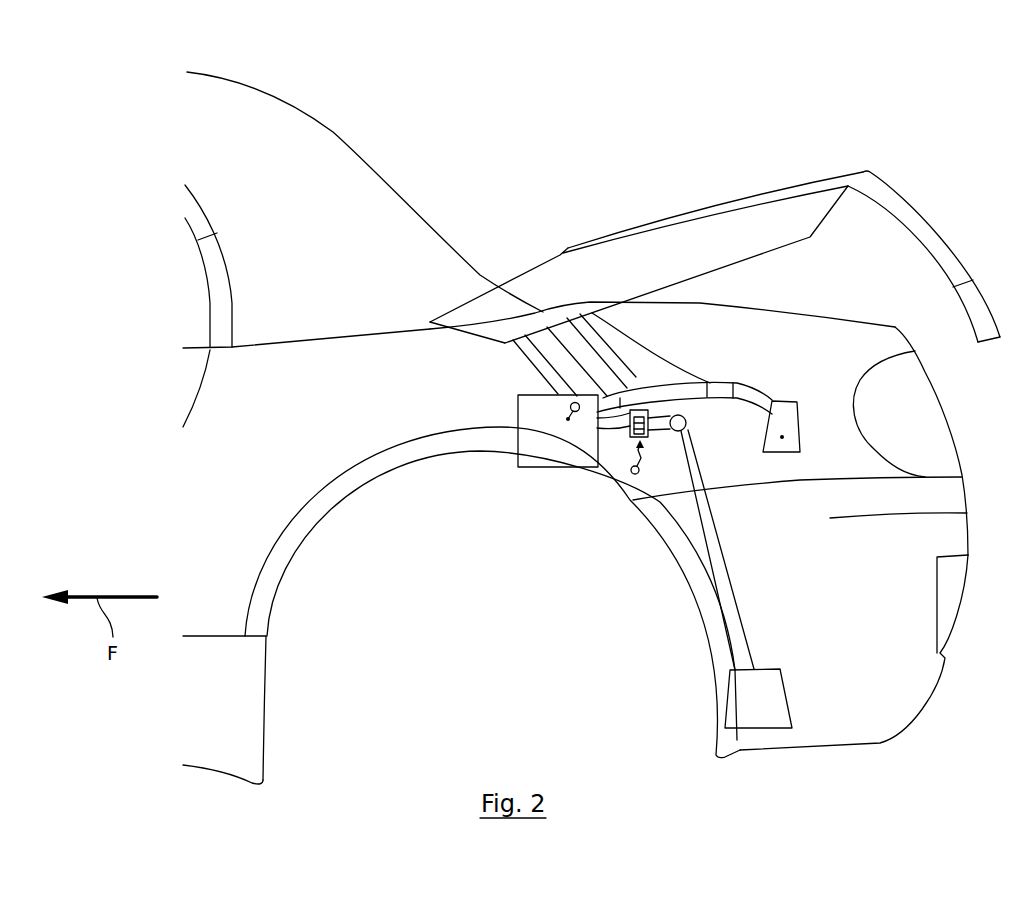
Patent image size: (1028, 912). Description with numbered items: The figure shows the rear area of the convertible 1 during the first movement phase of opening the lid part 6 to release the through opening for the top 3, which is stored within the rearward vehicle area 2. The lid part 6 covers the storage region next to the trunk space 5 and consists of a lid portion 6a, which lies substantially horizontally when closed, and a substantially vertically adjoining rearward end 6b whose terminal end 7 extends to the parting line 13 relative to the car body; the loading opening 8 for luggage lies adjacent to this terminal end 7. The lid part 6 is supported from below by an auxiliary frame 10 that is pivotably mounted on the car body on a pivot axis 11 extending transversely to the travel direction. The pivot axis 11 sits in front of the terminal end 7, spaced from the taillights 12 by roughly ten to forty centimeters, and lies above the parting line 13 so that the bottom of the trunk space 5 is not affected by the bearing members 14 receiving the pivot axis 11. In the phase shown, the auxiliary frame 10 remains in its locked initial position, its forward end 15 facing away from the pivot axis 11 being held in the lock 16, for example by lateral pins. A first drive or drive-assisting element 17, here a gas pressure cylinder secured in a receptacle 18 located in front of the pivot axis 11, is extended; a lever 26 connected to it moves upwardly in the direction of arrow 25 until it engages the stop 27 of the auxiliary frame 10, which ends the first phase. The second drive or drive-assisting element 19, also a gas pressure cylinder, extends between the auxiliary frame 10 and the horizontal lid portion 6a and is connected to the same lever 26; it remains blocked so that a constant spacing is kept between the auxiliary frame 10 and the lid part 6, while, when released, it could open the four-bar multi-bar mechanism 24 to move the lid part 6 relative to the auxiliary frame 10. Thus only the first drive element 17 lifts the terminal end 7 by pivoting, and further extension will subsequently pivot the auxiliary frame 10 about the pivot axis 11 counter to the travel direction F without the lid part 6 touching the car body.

The convertible 1 is at (508, 163).
The rearward vehicle area 2 is at (775, 110).
The top 3 is at (253, 107).
The trunk space 5 is at (828, 393).
The lid part 6 is at (802, 207).
The lid portion 6a is at (740, 182).
The rearward end 6b is at (936, 201).
The terminal end 7 is at (983, 310).
The loading opening 8 is at (936, 352).
The auxiliary frame 10 is at (679, 390).
The pivot axis 11 is at (786, 408).
The taillights 12 is at (912, 413).
The parting line 13 is at (972, 466).
The bearing members 14 is at (782, 437).
The forward end 15 is at (540, 363).
The lock 16 is at (568, 419).
The drive or drive-assisting element 17 is at (718, 540).
The receptacle 18 is at (763, 715).
The second drive or drive-assisting element 19 is at (612, 384).
The multi-bar mechanism 24 is at (677, 331).
The arrow 25 is at (641, 458).
The lever 26 is at (675, 427).
The stop 27 is at (626, 438).